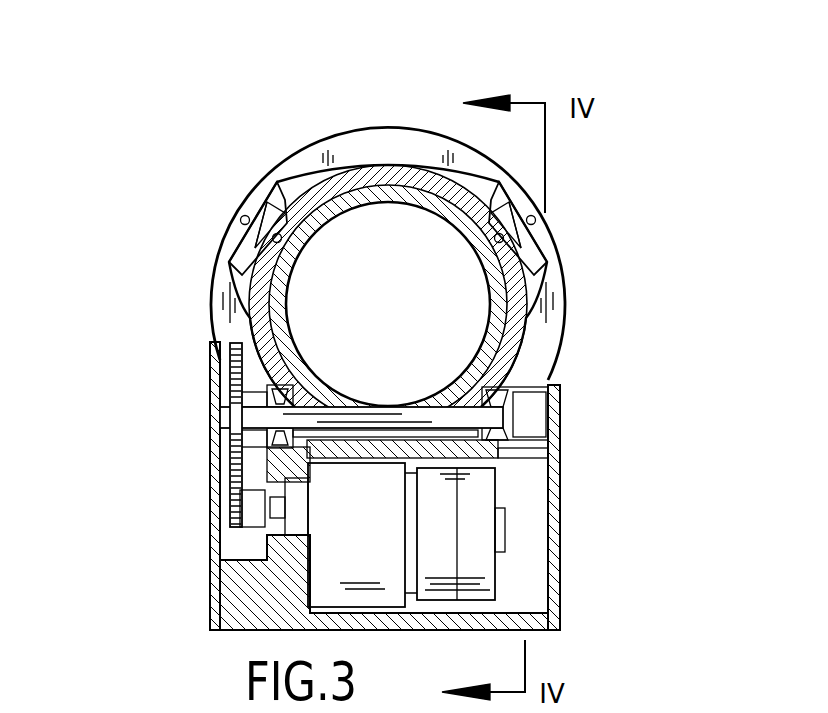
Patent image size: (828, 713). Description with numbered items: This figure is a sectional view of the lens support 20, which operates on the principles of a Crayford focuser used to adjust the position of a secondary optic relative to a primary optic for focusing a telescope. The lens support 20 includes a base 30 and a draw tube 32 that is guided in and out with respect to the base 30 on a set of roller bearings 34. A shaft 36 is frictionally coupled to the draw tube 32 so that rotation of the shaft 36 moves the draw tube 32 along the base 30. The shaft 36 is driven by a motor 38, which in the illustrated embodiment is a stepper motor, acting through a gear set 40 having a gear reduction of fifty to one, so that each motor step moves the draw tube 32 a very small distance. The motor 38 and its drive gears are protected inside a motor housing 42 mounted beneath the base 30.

The lens support 20 is at (374, 316).
The base 30 is at (300, 162).
The draw tube 32 is at (373, 190).
The roller bearings 34 is at (262, 205).
The shaft 36 is at (380, 413).
The motor 38 is at (488, 493).
The gear set 40 is at (230, 465).
The motor housing 42 is at (560, 567).